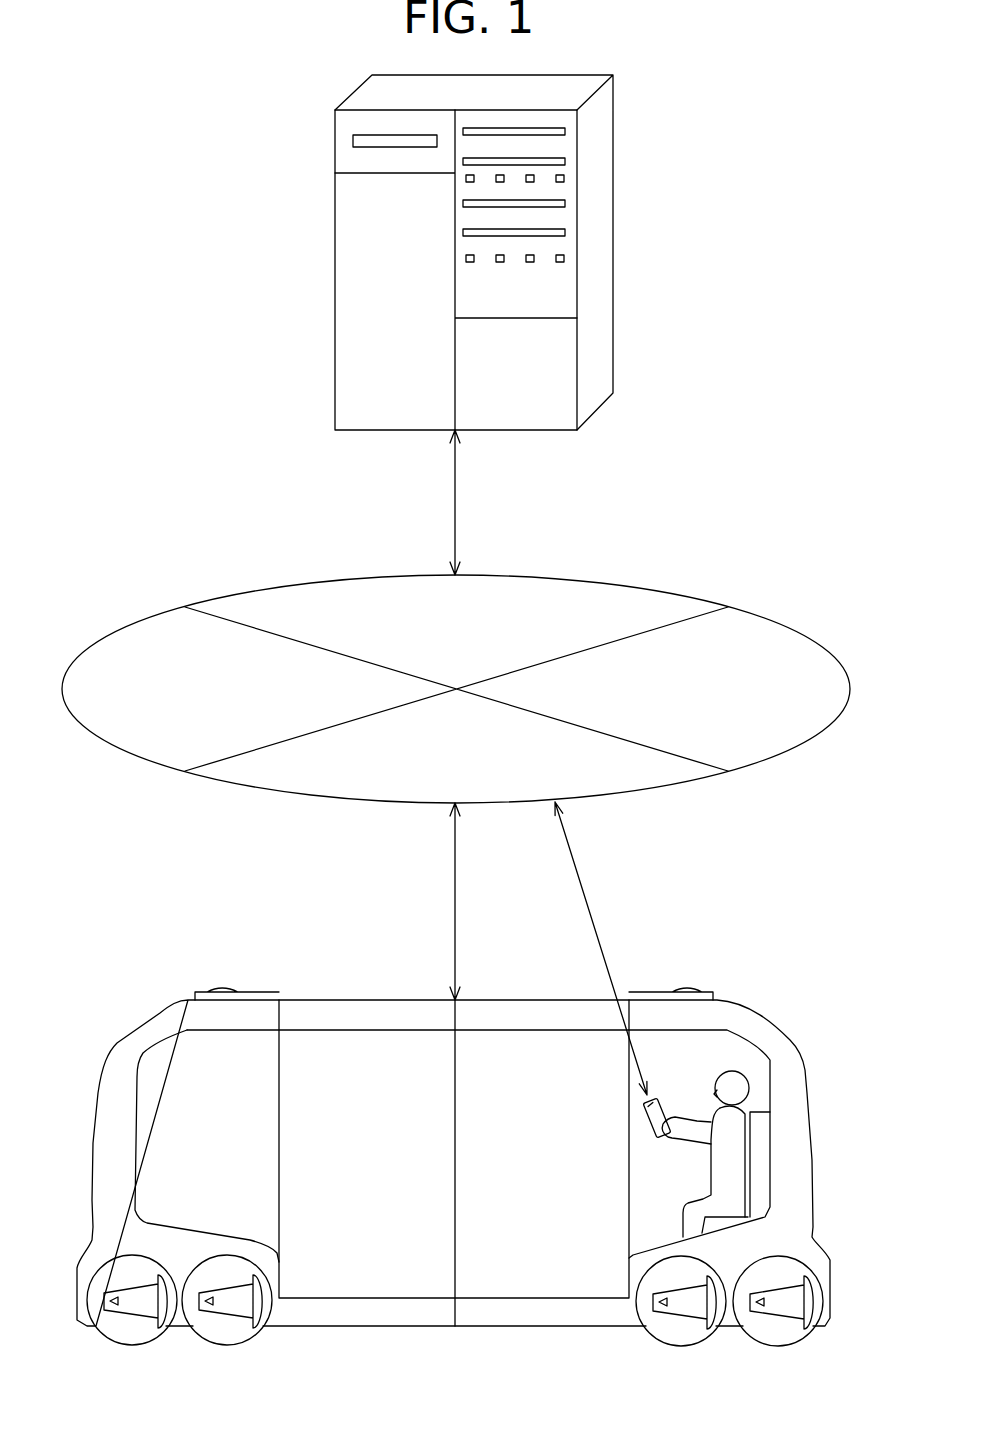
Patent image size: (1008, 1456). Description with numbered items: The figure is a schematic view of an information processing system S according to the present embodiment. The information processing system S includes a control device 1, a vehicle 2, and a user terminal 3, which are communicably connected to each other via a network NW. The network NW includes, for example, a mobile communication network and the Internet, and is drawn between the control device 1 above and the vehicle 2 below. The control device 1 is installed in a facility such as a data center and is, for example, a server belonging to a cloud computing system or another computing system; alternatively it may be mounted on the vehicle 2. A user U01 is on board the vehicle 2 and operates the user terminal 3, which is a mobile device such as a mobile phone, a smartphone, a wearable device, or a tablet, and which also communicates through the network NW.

The control device 1 is at (335, 258).
The vehicle 2 is at (389, 987).
The user terminal 3 is at (660, 1138).
The network NW is at (223, 597).
The user U01 is at (738, 1088).
The information processing system S is at (790, 495).